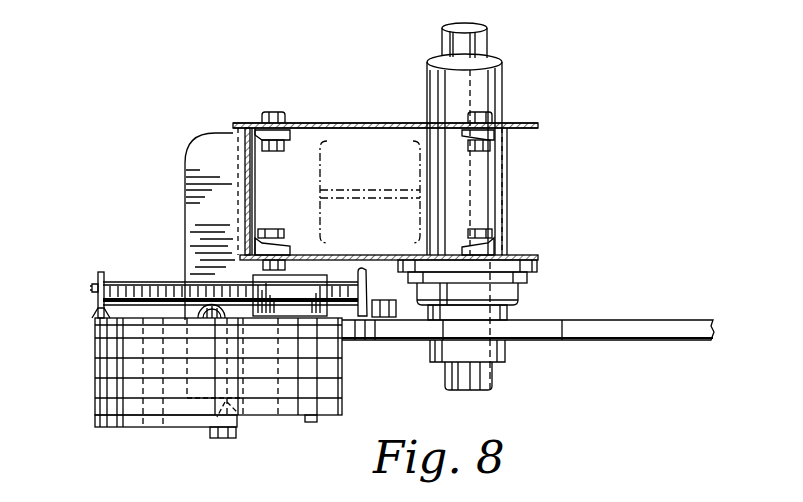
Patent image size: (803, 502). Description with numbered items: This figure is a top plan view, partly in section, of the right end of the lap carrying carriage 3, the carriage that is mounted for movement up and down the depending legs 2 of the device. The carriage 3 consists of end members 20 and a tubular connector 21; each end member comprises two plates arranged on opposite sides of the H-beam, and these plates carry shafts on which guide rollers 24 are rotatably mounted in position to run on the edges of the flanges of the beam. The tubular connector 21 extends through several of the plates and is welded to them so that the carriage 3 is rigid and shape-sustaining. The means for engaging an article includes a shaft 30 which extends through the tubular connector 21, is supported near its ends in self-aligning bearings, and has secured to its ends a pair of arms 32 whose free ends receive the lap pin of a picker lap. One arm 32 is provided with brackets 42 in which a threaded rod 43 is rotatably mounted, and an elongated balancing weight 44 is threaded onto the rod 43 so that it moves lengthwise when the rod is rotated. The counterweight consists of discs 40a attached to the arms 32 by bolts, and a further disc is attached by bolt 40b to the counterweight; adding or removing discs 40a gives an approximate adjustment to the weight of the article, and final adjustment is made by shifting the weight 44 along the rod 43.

The depending legs 2 is at (335, 161).
The carriage 3 is at (532, 119).
The end members 20 is at (365, 122).
The tubular connector 21 is at (490, 87).
The guide rollers 24 is at (356, 12).
The shaft 30 is at (470, 48).
The arms 32 is at (602, 327).
The discs 40a is at (103, 407).
The bolt 40b is at (237, 433).
The brackets 42 is at (98, 286).
The threaded rod 43 is at (152, 283).
The balancing weight 44 is at (315, 295).